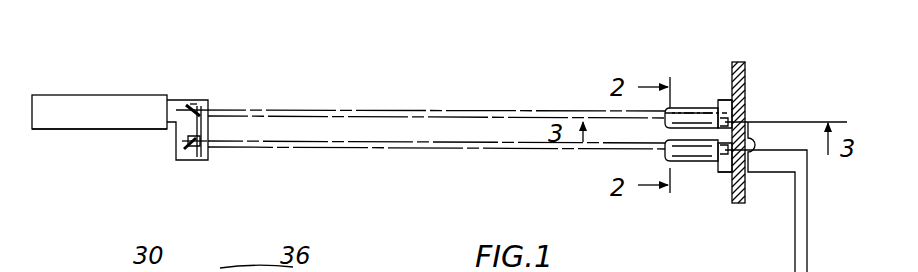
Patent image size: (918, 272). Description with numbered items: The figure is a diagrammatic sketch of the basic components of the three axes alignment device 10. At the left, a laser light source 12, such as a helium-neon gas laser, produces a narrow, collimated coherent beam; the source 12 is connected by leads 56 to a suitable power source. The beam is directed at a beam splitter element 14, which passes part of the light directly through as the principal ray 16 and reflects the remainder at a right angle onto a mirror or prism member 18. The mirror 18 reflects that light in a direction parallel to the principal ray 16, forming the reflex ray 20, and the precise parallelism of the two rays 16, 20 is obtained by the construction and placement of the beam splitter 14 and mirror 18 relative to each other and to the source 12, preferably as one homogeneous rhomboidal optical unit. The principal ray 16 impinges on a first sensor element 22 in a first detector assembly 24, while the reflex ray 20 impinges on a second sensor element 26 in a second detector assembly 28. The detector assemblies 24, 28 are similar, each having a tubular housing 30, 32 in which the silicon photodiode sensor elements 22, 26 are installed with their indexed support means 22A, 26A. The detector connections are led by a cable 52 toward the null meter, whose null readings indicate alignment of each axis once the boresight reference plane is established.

The three axes alignment device 10 is at (420, 145).
The laser light source 12 is at (62, 105).
The beam splitter element 14 is at (195, 103).
The principal ray 16 is at (328, 109).
The mirror or prism member 18 is at (190, 158).
The reflex ray 20 is at (345, 151).
The first sensor element 22 is at (730, 108).
The indexed support means 22A is at (740, 95).
The first detector assembly 24 is at (712, 101).
The second sensor element 26 is at (727, 168).
The indexed support means 26A is at (730, 172).
The second detector assembly 28 is at (712, 171).
The tubular housing 30 is at (678, 106).
The tubular housing 32 is at (697, 163).
The cable 52 is at (807, 268).
The leads 56 is at (58, 130).